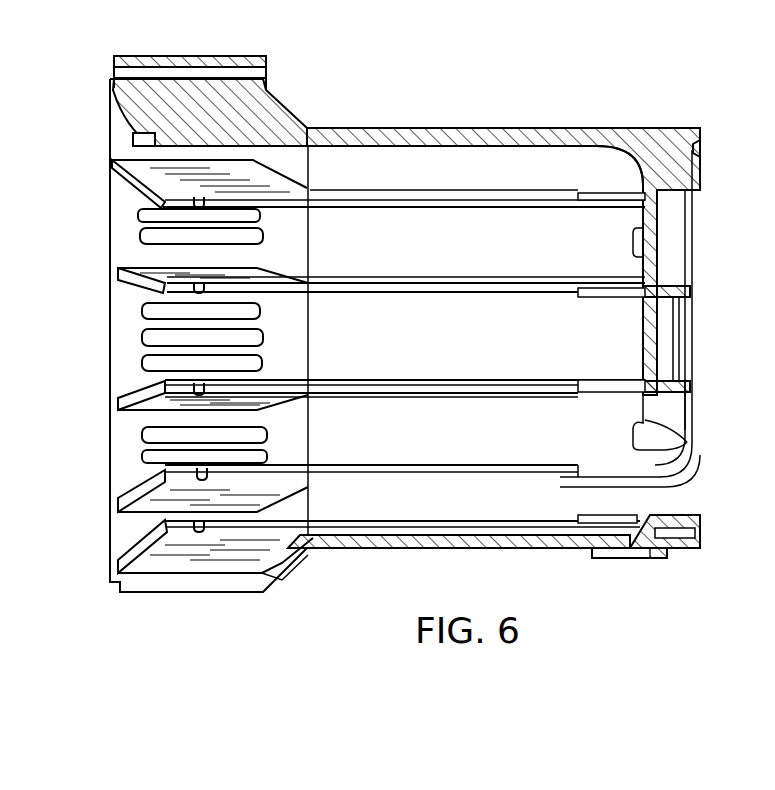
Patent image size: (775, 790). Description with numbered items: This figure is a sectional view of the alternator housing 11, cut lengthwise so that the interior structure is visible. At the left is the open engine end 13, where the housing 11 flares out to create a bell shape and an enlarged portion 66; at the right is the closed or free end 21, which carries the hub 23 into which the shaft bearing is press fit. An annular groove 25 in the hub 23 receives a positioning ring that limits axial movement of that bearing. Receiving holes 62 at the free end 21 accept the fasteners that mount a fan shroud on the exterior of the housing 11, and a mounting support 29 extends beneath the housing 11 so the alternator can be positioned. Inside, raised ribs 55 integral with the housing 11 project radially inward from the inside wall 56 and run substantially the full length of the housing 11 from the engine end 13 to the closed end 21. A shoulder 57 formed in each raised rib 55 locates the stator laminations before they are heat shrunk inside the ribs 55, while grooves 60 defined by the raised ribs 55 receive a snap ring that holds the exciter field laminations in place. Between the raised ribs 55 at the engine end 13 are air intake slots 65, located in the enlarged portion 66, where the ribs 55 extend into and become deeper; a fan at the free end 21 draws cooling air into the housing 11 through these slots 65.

The housing 11 is at (526, 128).
The engine end 13 is at (196, 50).
The closed end 21 is at (665, 122).
The hub 23 is at (668, 295).
The annular groove 25 is at (680, 322).
The mounting support 29 is at (668, 553).
The raised ribs 55 is at (414, 147).
The inside wall 56 is at (540, 160).
The shoulder 57 is at (580, 205).
The grooves 60 is at (200, 199).
The receiving holes 62 is at (700, 531).
The air intake slots 65 is at (133, 140).
The enlarged portion 66 is at (294, 105).